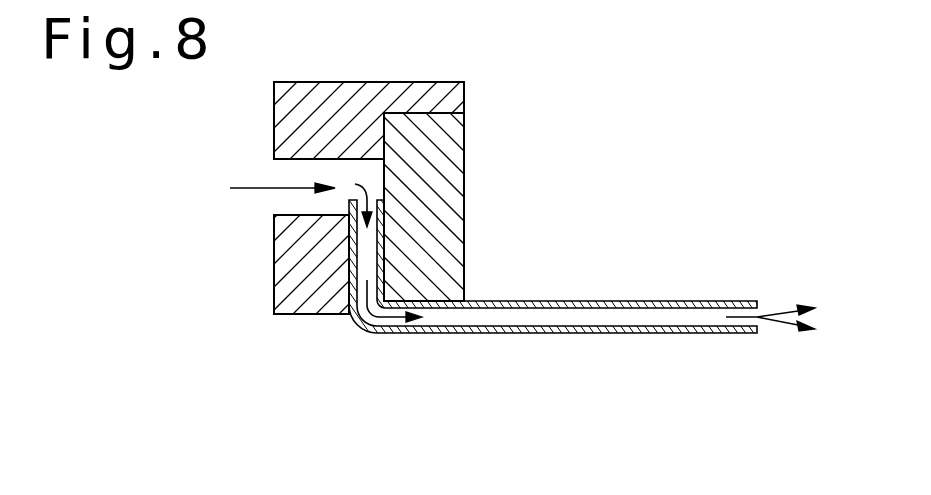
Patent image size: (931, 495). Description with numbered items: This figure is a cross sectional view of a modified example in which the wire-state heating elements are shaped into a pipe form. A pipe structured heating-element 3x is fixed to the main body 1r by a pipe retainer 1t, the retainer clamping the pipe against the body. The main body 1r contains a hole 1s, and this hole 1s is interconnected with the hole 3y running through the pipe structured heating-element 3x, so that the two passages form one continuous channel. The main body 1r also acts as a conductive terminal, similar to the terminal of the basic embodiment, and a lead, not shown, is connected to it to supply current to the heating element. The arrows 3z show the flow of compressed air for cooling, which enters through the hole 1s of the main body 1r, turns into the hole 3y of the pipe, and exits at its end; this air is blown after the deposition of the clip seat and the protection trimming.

The hole of main body 1s is at (309, 167).
The pipe retainer 1t is at (453, 193).
The main body 1r is at (274, 283).
The pipe structured heating-element 3x is at (635, 300).
The hole of pipe structured heating-element 3y is at (683, 315).
The flow of compressed air 3z is at (245, 187).